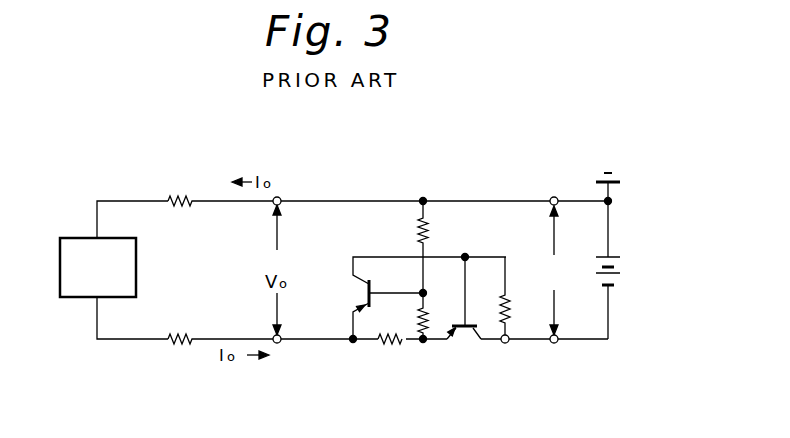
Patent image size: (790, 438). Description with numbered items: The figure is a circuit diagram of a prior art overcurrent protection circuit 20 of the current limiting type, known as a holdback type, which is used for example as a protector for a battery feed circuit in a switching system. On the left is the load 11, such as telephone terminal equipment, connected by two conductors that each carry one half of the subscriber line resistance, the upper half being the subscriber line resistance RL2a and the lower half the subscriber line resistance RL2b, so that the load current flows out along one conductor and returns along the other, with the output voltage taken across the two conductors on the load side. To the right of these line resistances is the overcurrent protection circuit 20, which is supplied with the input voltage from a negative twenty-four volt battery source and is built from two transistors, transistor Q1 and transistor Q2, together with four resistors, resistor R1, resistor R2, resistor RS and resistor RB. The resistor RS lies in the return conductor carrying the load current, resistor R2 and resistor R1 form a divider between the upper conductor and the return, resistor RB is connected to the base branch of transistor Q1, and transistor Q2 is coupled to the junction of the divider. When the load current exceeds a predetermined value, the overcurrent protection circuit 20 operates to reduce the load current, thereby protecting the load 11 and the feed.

The load 11 is at (66, 237).
The overcurrent protection circuit 20 is at (470, 233).
The resistor R1 is at (433, 319).
The resistor R2 is at (417, 229).
The resistor RS is at (386, 347).
The resistor RB is at (511, 311).
The transistor Q1 is at (465, 348).
The transistor Q2 is at (355, 291).
The subscriber line resistance RL2a is at (181, 207).
The subscriber line resistance RL2b is at (181, 345).